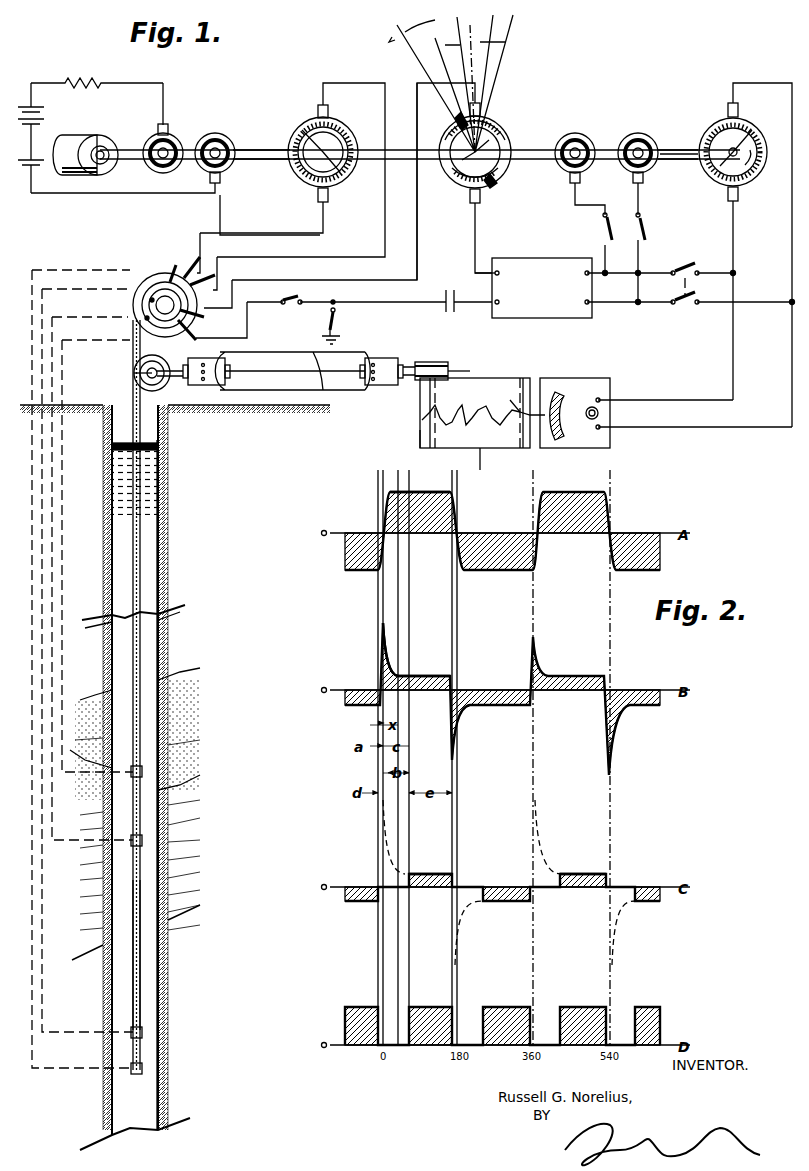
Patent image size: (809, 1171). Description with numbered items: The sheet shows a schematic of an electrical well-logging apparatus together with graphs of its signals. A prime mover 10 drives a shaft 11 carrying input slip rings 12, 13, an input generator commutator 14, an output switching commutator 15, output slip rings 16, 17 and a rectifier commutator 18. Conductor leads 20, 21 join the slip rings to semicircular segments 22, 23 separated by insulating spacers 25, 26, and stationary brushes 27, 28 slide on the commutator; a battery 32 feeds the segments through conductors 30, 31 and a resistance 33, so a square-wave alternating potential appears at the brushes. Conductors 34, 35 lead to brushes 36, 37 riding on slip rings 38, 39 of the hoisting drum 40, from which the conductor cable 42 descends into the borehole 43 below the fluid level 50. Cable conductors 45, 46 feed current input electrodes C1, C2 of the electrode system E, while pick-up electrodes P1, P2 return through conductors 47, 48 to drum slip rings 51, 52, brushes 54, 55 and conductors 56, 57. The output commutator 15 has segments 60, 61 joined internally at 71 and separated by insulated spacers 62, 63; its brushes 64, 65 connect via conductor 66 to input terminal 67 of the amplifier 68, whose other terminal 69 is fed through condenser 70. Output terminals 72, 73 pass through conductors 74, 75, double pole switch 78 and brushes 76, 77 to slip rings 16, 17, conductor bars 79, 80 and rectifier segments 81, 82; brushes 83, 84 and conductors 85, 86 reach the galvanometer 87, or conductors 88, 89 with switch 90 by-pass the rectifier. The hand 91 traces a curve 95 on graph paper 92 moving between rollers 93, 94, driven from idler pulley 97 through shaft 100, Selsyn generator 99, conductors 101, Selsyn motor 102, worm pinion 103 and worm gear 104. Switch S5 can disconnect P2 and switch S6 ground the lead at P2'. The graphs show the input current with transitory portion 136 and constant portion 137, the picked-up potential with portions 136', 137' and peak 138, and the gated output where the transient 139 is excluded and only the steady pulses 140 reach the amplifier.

In FIG. 1, the prime mover 10 is at (95, 140).
In FIG. 1, the drive shaft 11 is at (135, 150).
In FIG. 1, the input slip ring 12 is at (180, 136).
In FIG. 1, the input slip ring 13 is at (228, 136).
In FIG. 1, the input generator commutator 14 is at (292, 162).
In FIG. 1, the output switching commutator 15 is at (464, 144).
In FIG. 1, the output slip ring 16 is at (571, 155).
In FIG. 1, the output slip ring 17 is at (646, 155).
In FIG. 1, the rectifier commutator 18 is at (736, 247).
In FIG. 1, the conductor lead 20 is at (250, 170).
In FIG. 1, the conductor lead 21 is at (258, 149).
In FIG. 1, the commutator segment 22 is at (348, 166).
In FIG. 1, the commutator segment 23 is at (305, 125).
In FIG. 1, the insulating spacer 25 is at (316, 190).
In FIG. 1, the insulating spacer 26 is at (332, 122).
In FIG. 1, the stationary brush 27 is at (332, 200).
In FIG. 1, the stationary brush 28 is at (315, 105).
In FIG. 1, the conductor 30 is at (140, 83).
In FIG. 1, the conductor 31 is at (105, 193).
In FIG. 1, the electric battery 32 is at (44, 128).
In FIG. 1, the resistance 33 is at (85, 80).
In FIG. 1, the conductor 34 is at (218, 232).
In FIG. 1, the conductor 35 is at (385, 248).
In FIG. 1, the stationary brush 36 is at (196, 266).
In FIG. 1, the stationary brush 37 is at (217, 278).
In FIG. 1, the drum slip ring 38 is at (176, 268).
In FIG. 1, the drum slip ring 39 is at (155, 272).
In FIG. 1, the conductor cable hoisting drum 40 is at (165, 293).
In FIG. 1, the conductor cable 42 is at (145, 542).
In FIG. 1, the earth borehole 43 is at (160, 572).
In FIG. 1, the cable conductor 45 is at (62, 485).
In FIG. 1, the cable conductor 46 is at (52, 525).
In FIG. 1, the cable conductor 47 is at (42, 558).
In FIG. 1, the cable conductor 48 is at (32, 586).
In FIG. 1, the well fluid level 50 is at (162, 446).
In FIG. 1, the drum slip ring 51 is at (148, 300).
In FIG. 1, the drum slip ring 52 is at (144, 318).
In FIG. 1, the stationary brush 54 is at (205, 313).
In FIG. 1, the stationary brush 55 is at (185, 340).
In FIG. 1, the conductor 56 is at (417, 248).
In FIG. 1, the conductor 57 is at (430, 302).
In FIG. 1, the commutator segment 60 is at (460, 186).
In FIG. 1, the commutator segment 61 is at (503, 135).
In FIG. 1, the insulated spacer segment 62 is at (485, 192).
In FIG. 1, the insulated spacer segment 63 is at (455, 120).
In FIG. 1, the stationary brush 64 is at (480, 108).
In FIG. 1, the stationary brush 65 is at (470, 208).
In FIG. 1, the conductor 66 is at (478, 262).
In FIG. 1, the input terminal 67 is at (500, 270).
In FIG. 1, the amplifier 68 is at (533, 285).
In FIG. 1, the input terminal 69 is at (498, 305).
In FIG. 1, the condenser 70 is at (450, 312).
In FIG. 1, the internal connection 71 is at (492, 178).
In FIG. 1, the output terminal 72 is at (586, 270).
In FIG. 1, the output terminal 73 is at (585, 305).
In FIG. 1, the conductor 74 is at (604, 248).
In FIG. 1, the conductor 75 is at (618, 304).
In FIG. 1, the brush 76 is at (572, 183).
In FIG. 1, the brush 77 is at (643, 183).
In FIG. 1, the double pole switch 78 is at (640, 235).
In FIG. 1, the conductor bar 79 is at (672, 162).
In FIG. 1, the conductor bar 80 is at (678, 148).
In FIG. 1, the commutator segment 81 is at (720, 190).
In FIG. 1, the commutator segment 82 is at (758, 133).
In FIG. 1, the stationary brush 83 is at (730, 103).
In FIG. 1, the stationary brush 84 is at (738, 202).
In FIG. 1, the conductor 85 is at (790, 350).
In FIG. 1, the conductor 86 is at (733, 370).
In FIG. 1, the galvanometer 87 is at (605, 388).
In FIG. 1, the conductor 88 is at (668, 272).
In FIG. 1, the conductor 89 is at (665, 304).
In FIG. 1, the switch 90 is at (692, 305).
In FIG. 1, the hand 91 is at (514, 405).
In FIG. 1, the graph paper 92 is at (486, 450).
In FIG. 1, the roller 93 is at (468, 413).
In FIG. 1, the paper transporting roll 94 is at (418, 436).
In FIG. 1, the curve 95 is at (478, 415).
In FIG. 1, the idler pulley 97 is at (135, 372).
In FIG. 1, the Selsyn generator 99 is at (200, 382).
In FIG. 1, the shaft 100 is at (147, 380).
In FIG. 1, the conductors 101 is at (320, 392).
In FIG. 1, the Selsyn motor 102 is at (385, 386).
In FIG. 1, the worm pinion 103 is at (400, 366).
In FIG. 1, the worm gear 104 is at (446, 366).
In FIG. 1, the switch S5 is at (286, 305).
In FIG. 1, the switch S6 is at (336, 322).
In FIG. 1, the ground connection P2' is at (349, 335).
In FIG. 1, the current input electrode C1 is at (145, 775).
In FIG. 1, the current input electrode C2 is at (145, 842).
In FIG. 1, the electrode system E is at (154, 949).
In FIG. 1, the potential pick-up electrode P1 is at (145, 1032).
In FIG. 1, the potential pick-up electrode P2 is at (170, 1060).
In FIG. 2, the transitory portion 136 is at (494, 534).
In FIG. 2, the constant portion 137 is at (448, 544).
In FIG. 2, the transitory portion 136' is at (491, 699).
In FIG. 2, the constant amplitude portion 137' is at (455, 703).
In FIG. 2, the transitory peak 138 is at (390, 655).
In FIG. 2, the transitory peak portion 139 is at (540, 845).
In FIG. 2, the square wave potential pulses 140 is at (580, 872).